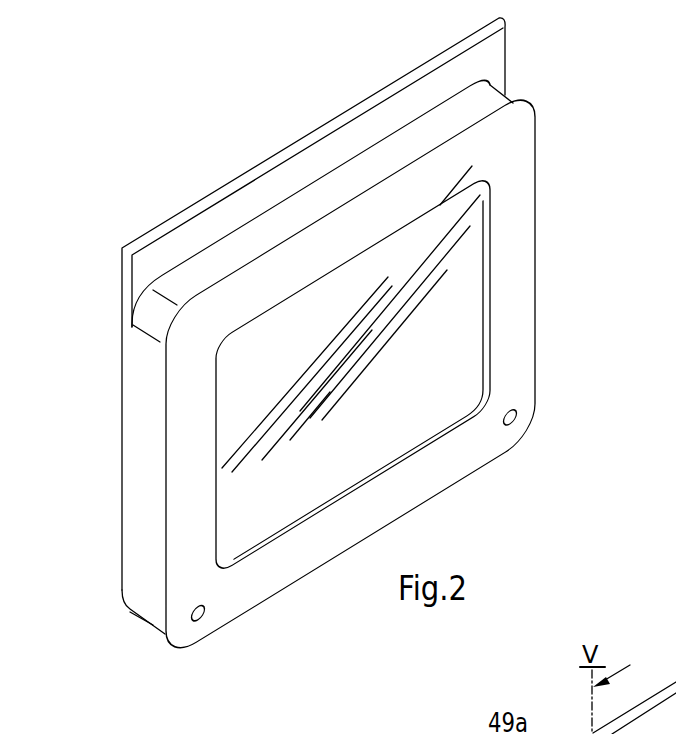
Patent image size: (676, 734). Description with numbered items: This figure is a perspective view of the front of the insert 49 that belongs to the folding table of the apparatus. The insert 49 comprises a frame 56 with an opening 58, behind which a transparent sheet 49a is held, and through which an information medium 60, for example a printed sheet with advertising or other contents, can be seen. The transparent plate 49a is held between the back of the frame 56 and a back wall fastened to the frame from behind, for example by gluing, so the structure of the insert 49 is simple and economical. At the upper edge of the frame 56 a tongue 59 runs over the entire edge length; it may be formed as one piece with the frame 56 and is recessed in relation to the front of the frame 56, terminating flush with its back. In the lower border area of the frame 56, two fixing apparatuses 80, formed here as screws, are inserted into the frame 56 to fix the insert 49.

The insert 49 is at (399, 360).
The transparent sheet 49a is at (233, 385).
The frame 56 is at (522, 143).
The opening 58 is at (478, 265).
The tongue 59 is at (233, 213).
The information medium 60 is at (447, 328).
The fixing apparatus 80 is at (518, 432).